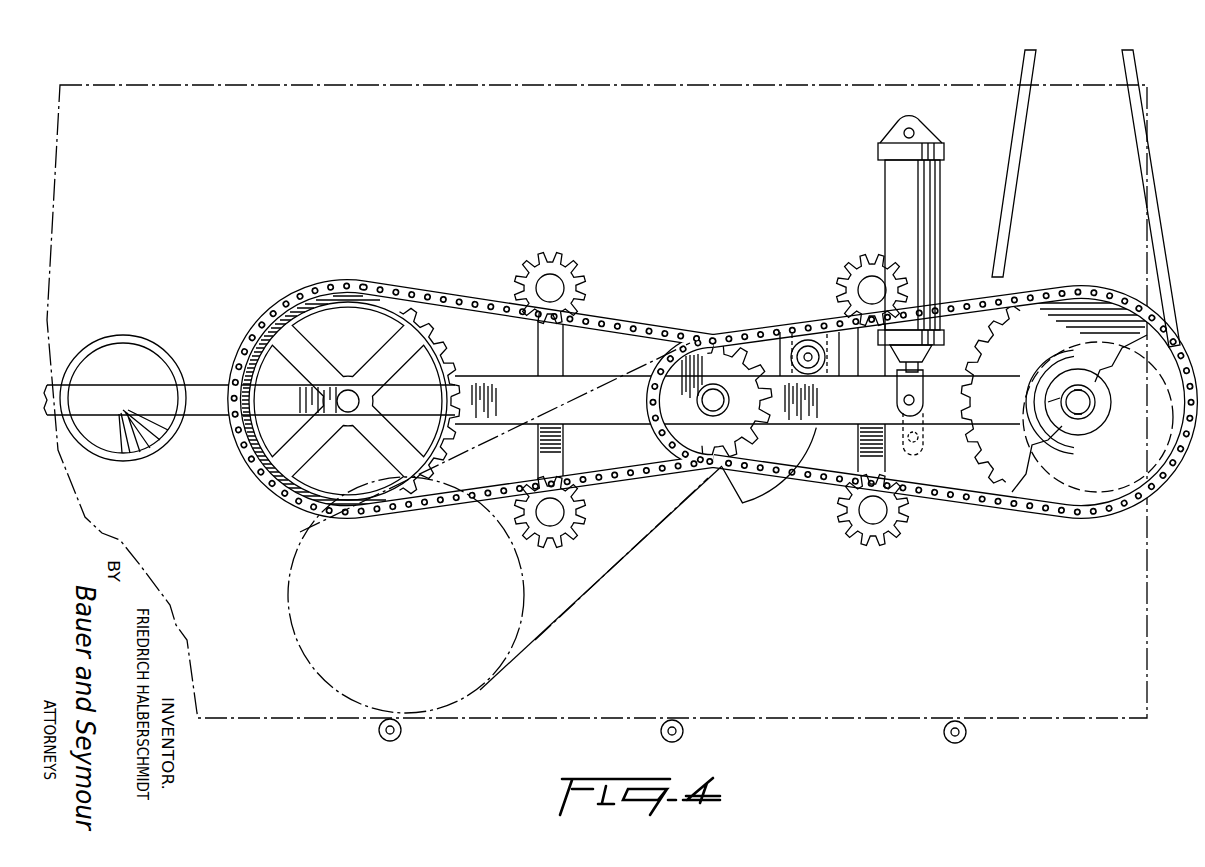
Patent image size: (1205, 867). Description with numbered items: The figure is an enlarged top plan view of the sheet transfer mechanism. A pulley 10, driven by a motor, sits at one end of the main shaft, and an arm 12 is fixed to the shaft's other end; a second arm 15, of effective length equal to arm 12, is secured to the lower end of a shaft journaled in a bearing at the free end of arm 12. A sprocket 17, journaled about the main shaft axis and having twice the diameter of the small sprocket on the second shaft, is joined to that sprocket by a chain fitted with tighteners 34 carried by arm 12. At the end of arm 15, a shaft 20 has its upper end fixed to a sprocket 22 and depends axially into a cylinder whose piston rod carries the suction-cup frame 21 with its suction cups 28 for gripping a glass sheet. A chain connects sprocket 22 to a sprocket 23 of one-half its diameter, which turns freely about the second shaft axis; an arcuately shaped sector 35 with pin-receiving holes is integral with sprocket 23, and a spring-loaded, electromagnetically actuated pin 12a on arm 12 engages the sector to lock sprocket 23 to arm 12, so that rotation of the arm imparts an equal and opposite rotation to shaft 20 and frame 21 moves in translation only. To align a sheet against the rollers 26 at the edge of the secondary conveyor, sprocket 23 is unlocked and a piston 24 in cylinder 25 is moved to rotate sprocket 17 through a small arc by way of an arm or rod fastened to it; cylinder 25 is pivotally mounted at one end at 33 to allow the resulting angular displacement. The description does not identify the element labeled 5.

The base frame 5 is at (1040, 718).
The pulley 10 is at (1146, 389).
The arm 12 is at (842, 408).
The pin 12a is at (808, 352).
The arm 15 is at (522, 405).
The sprocket 17 is at (1012, 490).
The shaft 20 is at (288, 590).
The suction-cup frame 21 is at (200, 384).
The sprocket 22 is at (300, 296).
The sprocket 23 is at (692, 462).
The piston 24 is at (938, 408).
The cylinder 25 is at (926, 226).
The rollers 26 is at (380, 736).
The suction cups 28 is at (107, 354).
The pivot mounting 33 is at (915, 130).
The tighteners 34 is at (540, 260).
The sector 35 is at (758, 488).